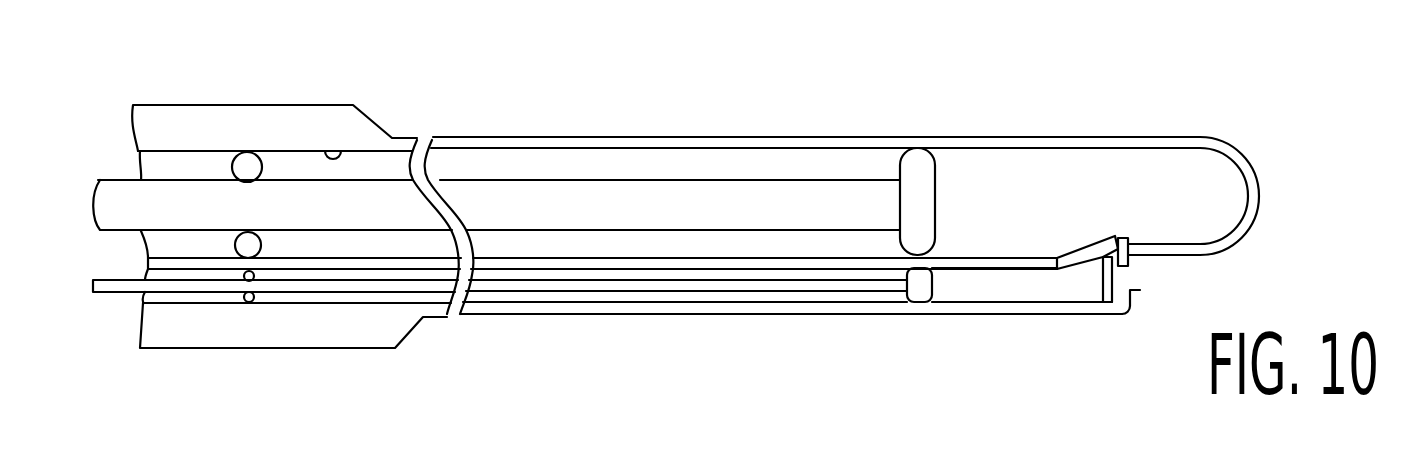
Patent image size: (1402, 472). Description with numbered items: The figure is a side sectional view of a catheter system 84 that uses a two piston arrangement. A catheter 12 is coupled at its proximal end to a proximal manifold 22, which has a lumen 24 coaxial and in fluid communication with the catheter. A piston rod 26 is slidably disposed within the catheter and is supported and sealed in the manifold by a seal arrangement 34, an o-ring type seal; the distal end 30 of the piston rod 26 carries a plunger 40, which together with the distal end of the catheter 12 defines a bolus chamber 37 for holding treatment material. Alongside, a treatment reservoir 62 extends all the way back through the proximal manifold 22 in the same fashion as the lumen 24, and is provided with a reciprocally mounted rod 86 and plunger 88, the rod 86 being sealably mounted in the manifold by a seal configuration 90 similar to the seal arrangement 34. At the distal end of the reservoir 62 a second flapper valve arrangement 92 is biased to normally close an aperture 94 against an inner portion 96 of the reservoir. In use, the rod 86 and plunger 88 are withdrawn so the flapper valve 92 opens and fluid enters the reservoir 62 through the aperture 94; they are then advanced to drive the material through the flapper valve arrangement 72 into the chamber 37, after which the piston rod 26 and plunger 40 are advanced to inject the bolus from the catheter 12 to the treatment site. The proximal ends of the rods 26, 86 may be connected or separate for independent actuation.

The catheter 12 is at (604, 134).
The proximal manifold 22 is at (298, 328).
The lumen 24 is at (343, 153).
The piston rod 26 is at (714, 170).
The distal end 30 is at (878, 195).
The seal arrangement 34 is at (259, 136).
The bolus chamber 37 is at (1047, 177).
The plunger 40 is at (920, 163).
The treatment reservoir 62 is at (990, 282).
The flapper valve arrangement 72 is at (1092, 236).
The catheter system 84 is at (1264, 160).
The rod 86 is at (578, 285).
The plunger 88 is at (923, 283).
The seal configuration 90 is at (243, 300).
The second flapper valve arrangement 92 is at (1062, 287).
The aperture 94 is at (1132, 289).
The inner portion 96 is at (1123, 240).